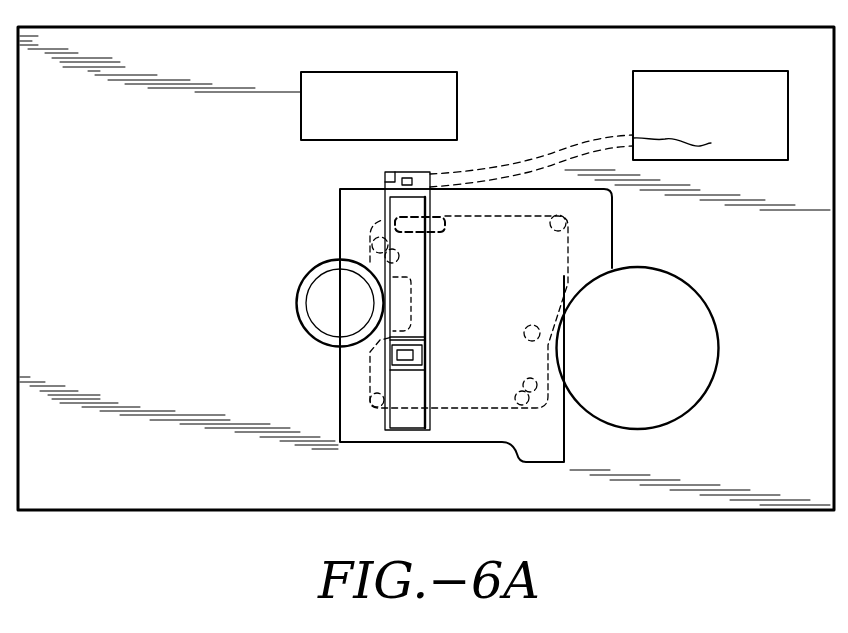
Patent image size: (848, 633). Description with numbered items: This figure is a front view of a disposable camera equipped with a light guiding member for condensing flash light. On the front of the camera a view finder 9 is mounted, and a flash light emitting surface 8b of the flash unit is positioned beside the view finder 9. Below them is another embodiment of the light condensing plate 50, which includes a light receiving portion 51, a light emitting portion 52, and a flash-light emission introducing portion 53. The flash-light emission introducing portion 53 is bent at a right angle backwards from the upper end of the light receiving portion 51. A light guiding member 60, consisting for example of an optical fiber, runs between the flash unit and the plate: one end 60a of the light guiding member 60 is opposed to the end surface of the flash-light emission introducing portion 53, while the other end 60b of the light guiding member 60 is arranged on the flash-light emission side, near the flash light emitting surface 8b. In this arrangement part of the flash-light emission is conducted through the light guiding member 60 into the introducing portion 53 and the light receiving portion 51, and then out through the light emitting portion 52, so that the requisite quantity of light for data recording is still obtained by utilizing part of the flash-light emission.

The view finder 9 is at (383, 90).
The flash light emitting surface 8b is at (727, 87).
The light guiding member 60 is at (553, 152).
The one end of the light guiding member 60a is at (388, 173).
The other end of the light guiding member 60b is at (691, 141).
The flash-light emission introducing portion 53 is at (429, 192).
The light receiving portion 51 is at (416, 276).
The light condensing plate 50 is at (402, 243).
The light emitting portion 52 is at (413, 352).